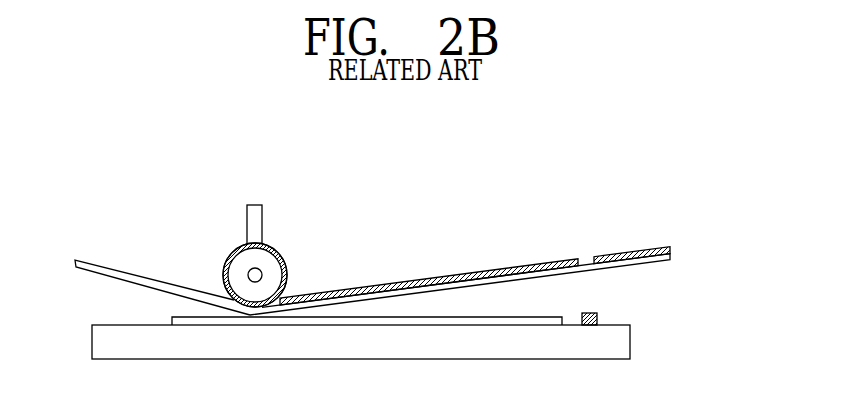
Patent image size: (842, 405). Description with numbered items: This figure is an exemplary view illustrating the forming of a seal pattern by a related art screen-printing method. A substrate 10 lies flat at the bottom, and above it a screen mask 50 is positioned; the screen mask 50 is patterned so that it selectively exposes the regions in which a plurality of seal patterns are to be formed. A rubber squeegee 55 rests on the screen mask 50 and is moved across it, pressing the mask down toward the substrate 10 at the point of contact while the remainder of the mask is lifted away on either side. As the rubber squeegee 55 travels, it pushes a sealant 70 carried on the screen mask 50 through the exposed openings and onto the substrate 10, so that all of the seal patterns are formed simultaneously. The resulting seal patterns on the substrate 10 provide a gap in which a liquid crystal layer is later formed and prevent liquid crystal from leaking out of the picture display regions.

The substrate 10 is at (618, 346).
The screen mask 50 is at (671, 256).
The rubber squeegee 55 is at (270, 262).
The sealant 70 is at (640, 250).